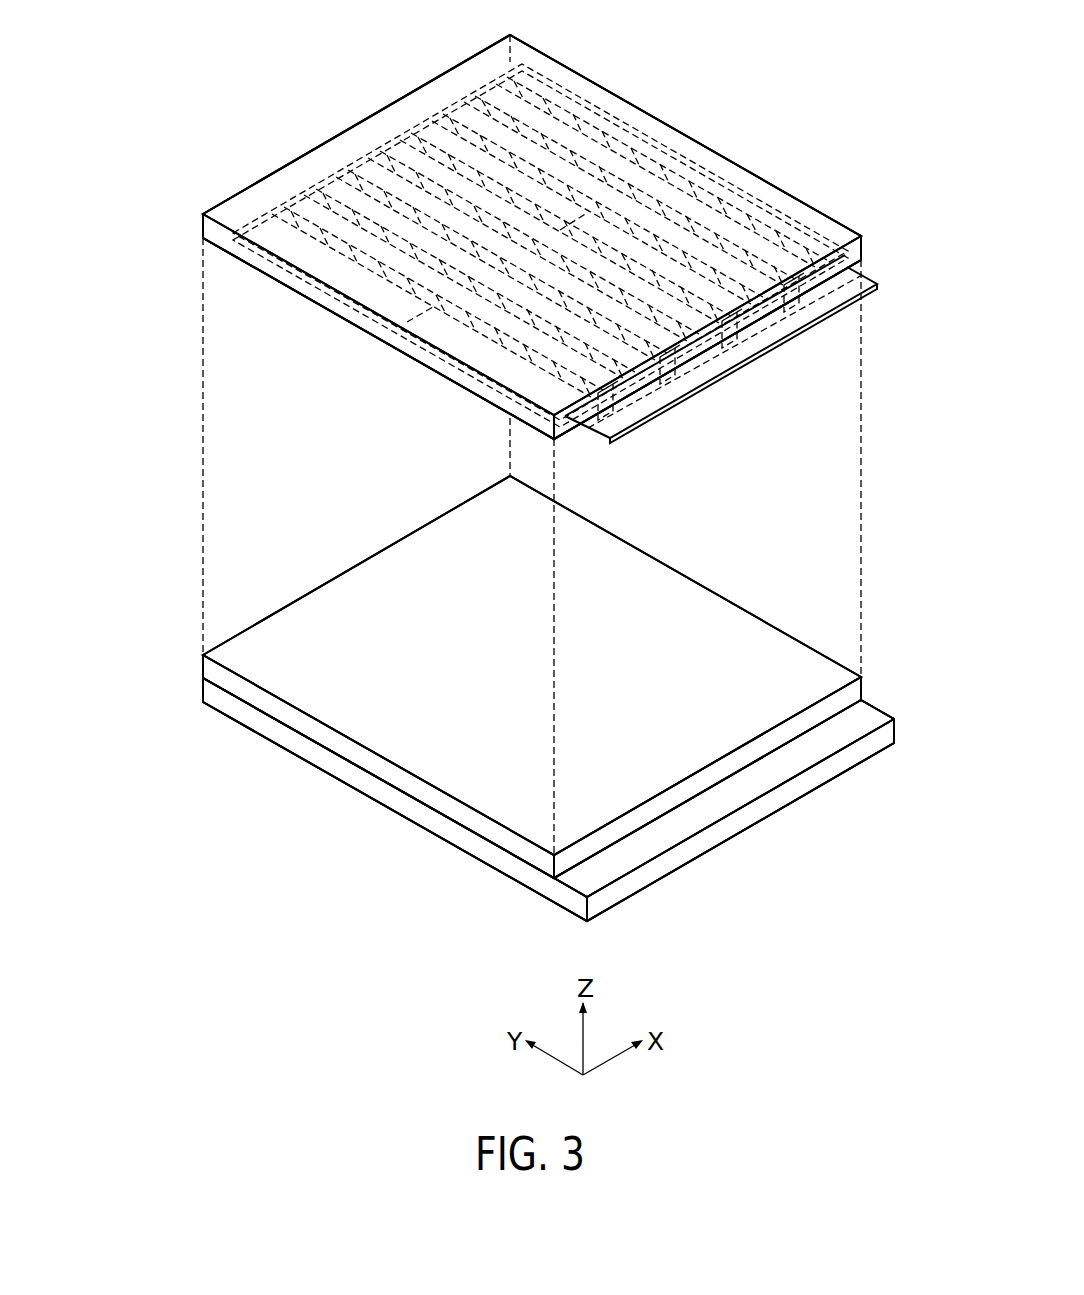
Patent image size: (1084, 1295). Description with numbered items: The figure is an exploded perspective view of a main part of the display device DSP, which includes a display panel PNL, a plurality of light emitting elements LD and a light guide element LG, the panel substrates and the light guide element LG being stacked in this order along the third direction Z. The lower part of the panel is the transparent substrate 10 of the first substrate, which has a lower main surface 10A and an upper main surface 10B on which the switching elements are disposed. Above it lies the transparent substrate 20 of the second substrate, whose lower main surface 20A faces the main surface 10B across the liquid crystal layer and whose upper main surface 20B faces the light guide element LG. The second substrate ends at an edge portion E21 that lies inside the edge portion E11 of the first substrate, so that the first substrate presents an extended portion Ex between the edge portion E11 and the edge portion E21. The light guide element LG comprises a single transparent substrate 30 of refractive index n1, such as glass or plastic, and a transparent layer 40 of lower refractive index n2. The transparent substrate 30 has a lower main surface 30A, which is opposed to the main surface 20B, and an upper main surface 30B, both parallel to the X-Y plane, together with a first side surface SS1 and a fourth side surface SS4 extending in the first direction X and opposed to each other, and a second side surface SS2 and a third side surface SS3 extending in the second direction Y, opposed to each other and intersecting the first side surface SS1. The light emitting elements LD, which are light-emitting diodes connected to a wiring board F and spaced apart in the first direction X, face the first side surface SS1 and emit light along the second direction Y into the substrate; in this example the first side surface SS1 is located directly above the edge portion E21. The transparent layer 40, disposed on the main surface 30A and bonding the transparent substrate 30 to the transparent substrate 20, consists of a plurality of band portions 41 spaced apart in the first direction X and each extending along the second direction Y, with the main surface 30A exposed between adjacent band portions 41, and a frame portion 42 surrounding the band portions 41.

The display device DSP is at (724, 127).
The light guide element LG is at (362, 110).
The transparent substrate 30 is at (203, 218).
The main surface 30A is at (391, 365).
The main surface 30B is at (432, 339).
The transparent layer 40 is at (350, 242).
The band portions 41 is at (485, 92).
The frame portion 42 is at (612, 118).
The first side surface SS1 is at (567, 433).
The second side surface SS2 is at (497, 403).
The third side surface SS3 is at (782, 191).
The fourth side surface SS4 is at (289, 166).
The wiring board F is at (776, 334).
The light emitting elements LD is at (727, 348).
The display panel PNL is at (397, 536).
The transparent substrate 10 is at (203, 700).
The transparent substrate 20 is at (203, 659).
The main surface 10A is at (294, 759).
The main surface 10B is at (322, 735).
The main surface 20A is at (404, 799).
The main surface 20B is at (432, 777).
The edge portion E11 is at (879, 749).
The edge portion E21 is at (863, 691).
The extended portion Ex is at (868, 720).